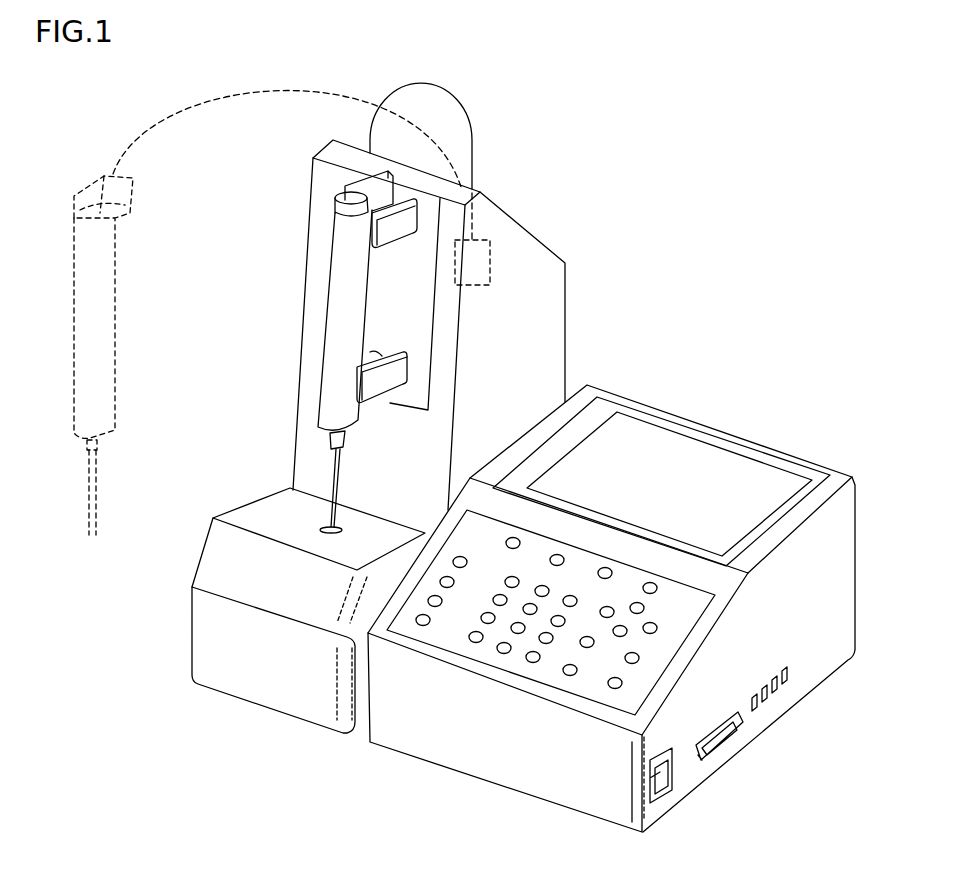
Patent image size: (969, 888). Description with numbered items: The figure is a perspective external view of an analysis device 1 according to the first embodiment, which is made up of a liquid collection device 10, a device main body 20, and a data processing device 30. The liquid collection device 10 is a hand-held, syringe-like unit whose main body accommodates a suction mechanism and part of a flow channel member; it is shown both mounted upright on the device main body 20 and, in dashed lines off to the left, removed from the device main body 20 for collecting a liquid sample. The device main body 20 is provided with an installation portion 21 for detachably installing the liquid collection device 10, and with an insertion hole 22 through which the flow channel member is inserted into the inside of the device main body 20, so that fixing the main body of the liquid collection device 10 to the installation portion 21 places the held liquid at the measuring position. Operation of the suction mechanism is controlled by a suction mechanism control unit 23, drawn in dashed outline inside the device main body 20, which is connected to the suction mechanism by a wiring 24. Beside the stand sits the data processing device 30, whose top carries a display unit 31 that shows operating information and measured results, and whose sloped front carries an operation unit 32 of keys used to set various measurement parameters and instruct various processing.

The analysis device 1 is at (829, 131).
The liquid collection device 10 is at (306, 242).
The device main body 20 is at (528, 208).
The installation portion 21 is at (415, 315).
The insertion hole 22 is at (320, 529).
The suction mechanism control unit 23 is at (490, 276).
The wiring 24 is at (465, 124).
The data processing device 30 is at (810, 406).
The display unit 31 is at (688, 468).
The operation unit 32 is at (597, 678).